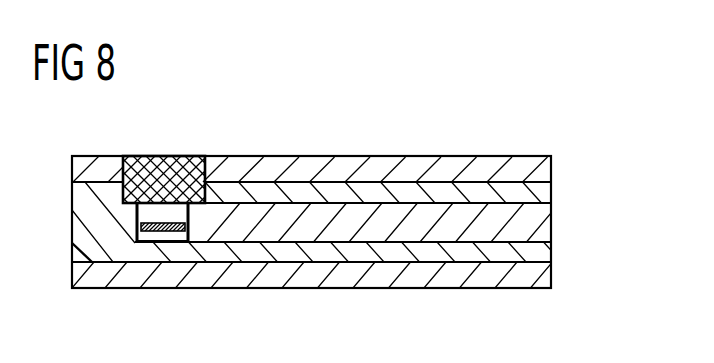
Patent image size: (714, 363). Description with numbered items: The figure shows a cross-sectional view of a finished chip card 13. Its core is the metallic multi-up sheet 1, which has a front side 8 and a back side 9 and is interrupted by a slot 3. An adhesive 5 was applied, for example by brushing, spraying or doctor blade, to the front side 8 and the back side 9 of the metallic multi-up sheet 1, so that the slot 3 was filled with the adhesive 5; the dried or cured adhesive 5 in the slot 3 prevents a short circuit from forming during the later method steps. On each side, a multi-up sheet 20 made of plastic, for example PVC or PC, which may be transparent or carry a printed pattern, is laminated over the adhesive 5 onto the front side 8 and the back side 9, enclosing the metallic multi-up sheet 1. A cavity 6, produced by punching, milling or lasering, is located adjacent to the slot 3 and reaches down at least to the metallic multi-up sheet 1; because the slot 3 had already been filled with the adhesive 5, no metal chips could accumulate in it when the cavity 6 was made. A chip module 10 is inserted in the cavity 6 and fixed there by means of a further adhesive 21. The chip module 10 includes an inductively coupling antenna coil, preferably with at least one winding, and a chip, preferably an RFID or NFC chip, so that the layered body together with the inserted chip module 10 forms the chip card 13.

The metallic multi-up sheet 1 is at (543, 224).
The slot 3 is at (84, 231).
The adhesive 5 is at (84, 197).
The cavity 6 is at (187, 226).
The front side 8 is at (448, 202).
The back side 9 is at (430, 242).
The chip module 10 is at (158, 174).
The chip card 13 is at (515, 126).
The multi-up sheet made of plastic 20 is at (542, 168).
The adhesive 21 is at (162, 226).